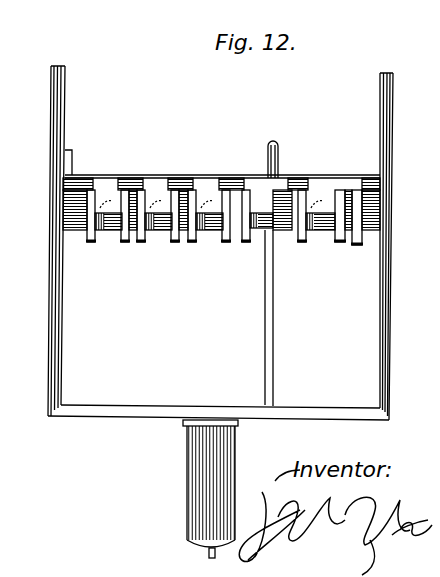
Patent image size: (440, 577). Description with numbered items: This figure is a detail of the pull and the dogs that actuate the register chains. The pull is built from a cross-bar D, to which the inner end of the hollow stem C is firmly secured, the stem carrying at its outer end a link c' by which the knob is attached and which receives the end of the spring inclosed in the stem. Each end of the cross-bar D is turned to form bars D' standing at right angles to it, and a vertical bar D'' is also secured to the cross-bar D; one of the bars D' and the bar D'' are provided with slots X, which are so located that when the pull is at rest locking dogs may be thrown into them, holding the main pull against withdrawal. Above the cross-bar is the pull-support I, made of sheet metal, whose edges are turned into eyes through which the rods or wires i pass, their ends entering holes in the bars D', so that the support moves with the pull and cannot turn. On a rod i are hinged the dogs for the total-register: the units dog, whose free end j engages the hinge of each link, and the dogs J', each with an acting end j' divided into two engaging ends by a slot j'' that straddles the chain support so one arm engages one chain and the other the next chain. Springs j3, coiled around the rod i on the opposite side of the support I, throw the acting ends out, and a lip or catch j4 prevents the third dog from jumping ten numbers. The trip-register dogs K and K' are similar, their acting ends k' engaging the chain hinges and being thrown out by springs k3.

The cross-bar D is at (218, 425).
The bars D' is at (222, 243).
The vertical bar D'' is at (284, 318).
The pull-support I is at (85, 176).
The rods or wires i is at (280, 178).
The dogs J' is at (168, 230).
The free or acting end j' is at (161, 264).
The slot j'' is at (159, 222).
The spring j3 is at (85, 232).
The lip or catch j4 is at (185, 243).
The free end of dog J j is at (248, 249).
The slots X is at (290, 178).
The dog for units-chain of trip-register K is at (381, 234).
The dog for tens-chain of trip-register K' is at (333, 231).
The acting end k' is at (318, 240).
The cross block k'' is at (317, 244).
The springs k3 is at (318, 212).
The hollow stem C is at (230, 465).
The link c' is at (196, 558).